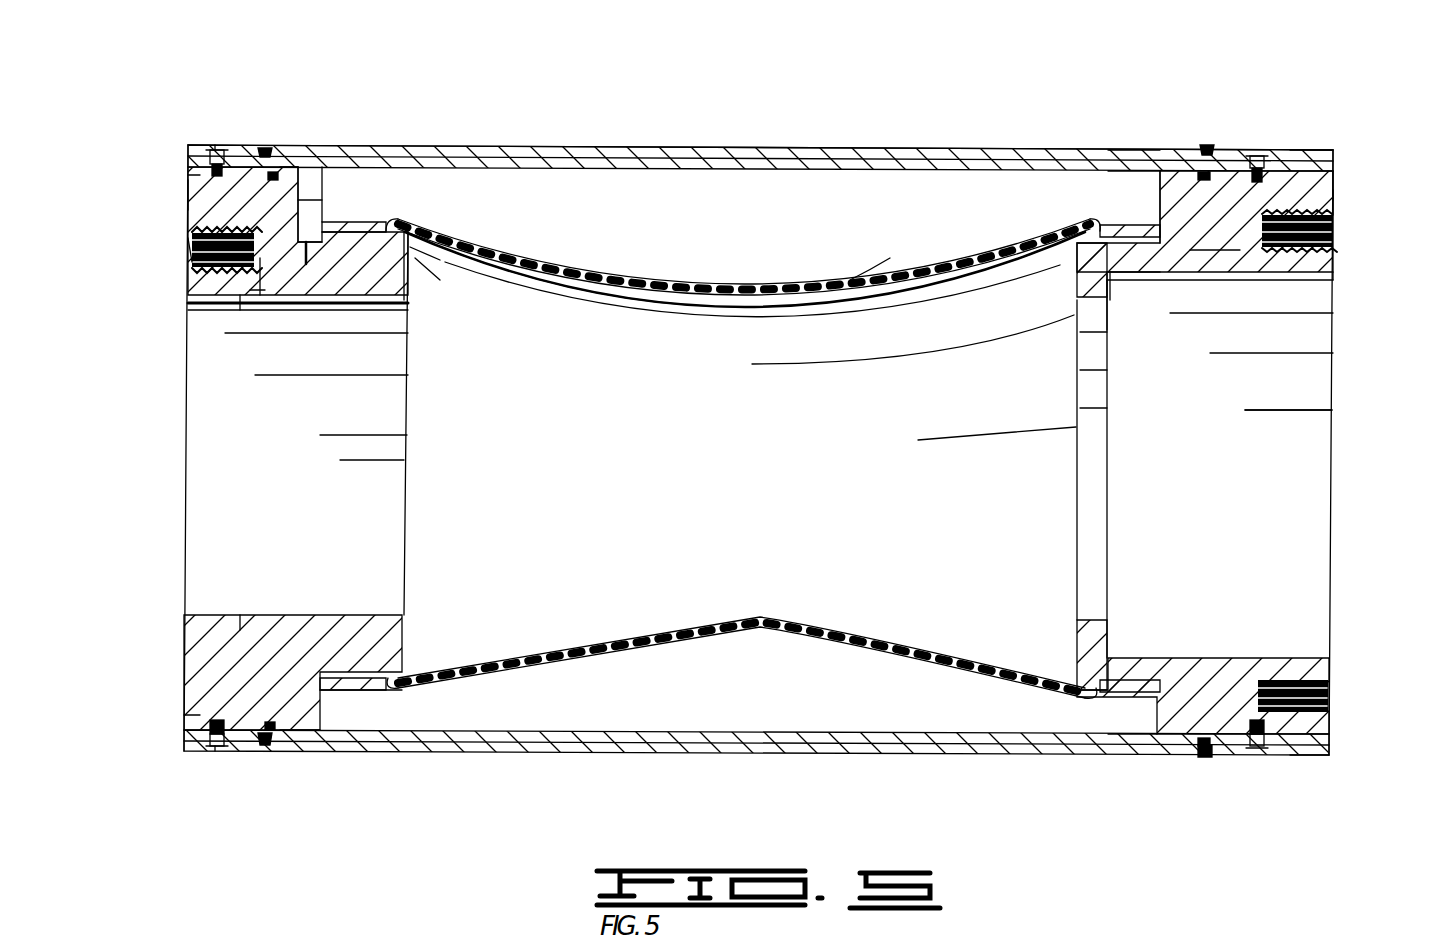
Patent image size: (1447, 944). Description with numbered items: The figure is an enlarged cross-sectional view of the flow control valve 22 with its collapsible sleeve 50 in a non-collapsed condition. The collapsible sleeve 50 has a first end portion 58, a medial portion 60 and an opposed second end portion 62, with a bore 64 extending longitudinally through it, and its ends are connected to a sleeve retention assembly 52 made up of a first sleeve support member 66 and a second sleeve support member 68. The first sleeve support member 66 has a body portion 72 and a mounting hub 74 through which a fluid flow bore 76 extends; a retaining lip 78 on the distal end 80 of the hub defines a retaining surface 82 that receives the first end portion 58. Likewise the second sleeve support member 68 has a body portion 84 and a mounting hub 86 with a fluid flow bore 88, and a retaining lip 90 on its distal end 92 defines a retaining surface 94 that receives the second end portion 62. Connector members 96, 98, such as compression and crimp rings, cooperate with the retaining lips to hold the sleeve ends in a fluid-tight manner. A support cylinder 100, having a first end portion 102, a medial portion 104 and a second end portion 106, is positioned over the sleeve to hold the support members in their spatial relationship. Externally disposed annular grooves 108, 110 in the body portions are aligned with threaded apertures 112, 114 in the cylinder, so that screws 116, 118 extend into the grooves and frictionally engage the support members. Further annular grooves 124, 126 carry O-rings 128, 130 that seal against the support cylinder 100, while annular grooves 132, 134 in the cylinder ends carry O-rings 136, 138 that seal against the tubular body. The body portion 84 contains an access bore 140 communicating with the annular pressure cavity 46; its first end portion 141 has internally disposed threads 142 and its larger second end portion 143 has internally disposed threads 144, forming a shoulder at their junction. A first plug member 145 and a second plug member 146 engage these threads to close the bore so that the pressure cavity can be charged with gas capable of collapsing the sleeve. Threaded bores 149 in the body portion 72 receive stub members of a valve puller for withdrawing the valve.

The flow control valve 22 is at (960, 145).
The annular pressure cavity 46 is at (700, 205).
The collapsible sleeve 50 is at (858, 262).
The sleeve retention assembly 52 is at (178, 193).
The first end portion 58 is at (1120, 262).
The medial portion 60 is at (720, 285).
The second end portion 62 is at (400, 250).
The bore 64 is at (568, 313).
The first sleeve support member 66 is at (1335, 262).
The second sleeve support member 68 is at (200, 185).
The body portion 72 is at (1228, 250).
The mounting hub 74 is at (1130, 260).
The fluid flow bore 76 is at (1275, 490).
The retaining lip 78 is at (1075, 270).
The distal end 80 is at (1078, 300).
The retaining surface 82 is at (1140, 255).
The body portion 84 is at (240, 312).
The mounting hub 86 is at (408, 262).
The fluid flow bore 88 is at (370, 462).
The retaining lip 90 is at (410, 250).
The distal end 92 is at (408, 258).
The retaining surface 94 is at (400, 258).
The connector member 96 is at (1090, 225).
The connector member 98 is at (392, 222).
The support cylinder 100 is at (1137, 148).
The first end portion 102 is at (1330, 150).
The medial portion 104 is at (800, 155).
The second end portion 106 is at (220, 147).
The annular groove 108 is at (1335, 182).
The annular groove 110 is at (186, 178).
The threaded aperture 112 is at (1268, 152).
The threaded aperture 114 is at (235, 147).
The screw 116 is at (1258, 156).
The screw 118 is at (198, 147).
The annular groove 124 is at (1230, 250).
The annular groove 126 is at (265, 198).
The O-ring 128 is at (1160, 184).
The O-ring 130 is at (317, 147).
The annular groove 132 is at (1204, 172).
The annular groove 134 is at (280, 147).
The O-ring 136 is at (1212, 148).
The O-ring 138 is at (267, 143).
The access bore 140 is at (295, 272).
The first end portion 141 is at (315, 205).
The internally disposed threads 142 is at (262, 296).
The second end portion 143 is at (192, 258).
The internally disposed threads 144 is at (195, 238).
The first plug member 145 is at (255, 300).
The second plug member 146 is at (188, 250).
The threaded bores 149 is at (1334, 233).